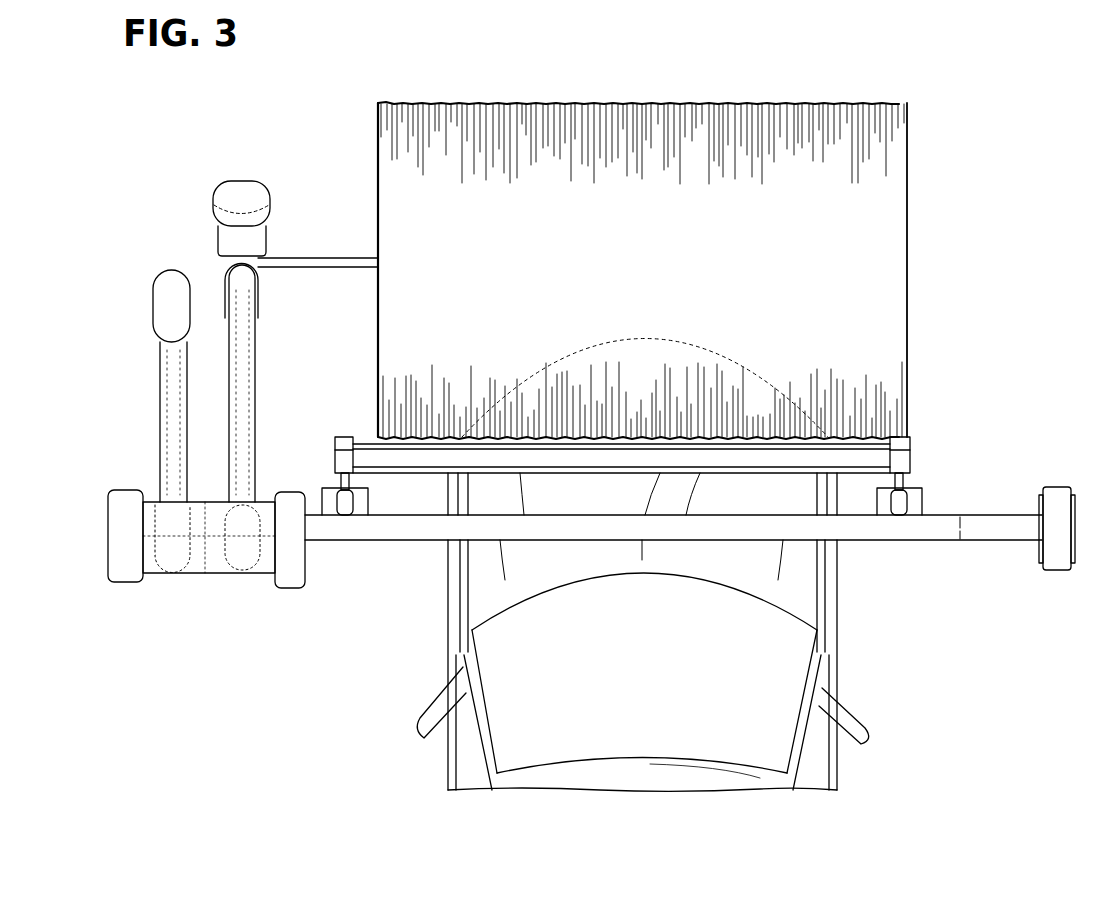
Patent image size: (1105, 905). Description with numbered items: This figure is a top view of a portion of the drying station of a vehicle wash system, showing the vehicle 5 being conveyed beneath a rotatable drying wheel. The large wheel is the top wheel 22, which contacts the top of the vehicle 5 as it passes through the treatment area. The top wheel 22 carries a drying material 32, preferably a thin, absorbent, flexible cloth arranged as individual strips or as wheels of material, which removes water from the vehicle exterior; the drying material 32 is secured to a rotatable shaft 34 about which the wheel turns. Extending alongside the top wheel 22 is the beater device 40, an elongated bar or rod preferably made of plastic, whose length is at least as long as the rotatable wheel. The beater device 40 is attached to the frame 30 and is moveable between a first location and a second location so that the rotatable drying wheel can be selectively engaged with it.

The top wheel 22 is at (908, 195).
The rotatable shaft 34 is at (378, 256).
The frame 30 is at (993, 516).
The drying material 32 is at (850, 438).
The beater device 40 is at (403, 475).
The vehicle 5 is at (846, 687).